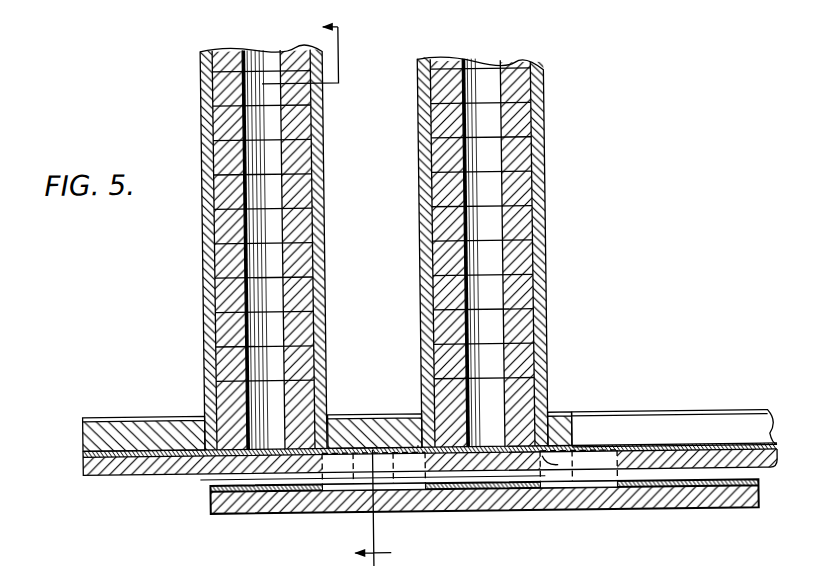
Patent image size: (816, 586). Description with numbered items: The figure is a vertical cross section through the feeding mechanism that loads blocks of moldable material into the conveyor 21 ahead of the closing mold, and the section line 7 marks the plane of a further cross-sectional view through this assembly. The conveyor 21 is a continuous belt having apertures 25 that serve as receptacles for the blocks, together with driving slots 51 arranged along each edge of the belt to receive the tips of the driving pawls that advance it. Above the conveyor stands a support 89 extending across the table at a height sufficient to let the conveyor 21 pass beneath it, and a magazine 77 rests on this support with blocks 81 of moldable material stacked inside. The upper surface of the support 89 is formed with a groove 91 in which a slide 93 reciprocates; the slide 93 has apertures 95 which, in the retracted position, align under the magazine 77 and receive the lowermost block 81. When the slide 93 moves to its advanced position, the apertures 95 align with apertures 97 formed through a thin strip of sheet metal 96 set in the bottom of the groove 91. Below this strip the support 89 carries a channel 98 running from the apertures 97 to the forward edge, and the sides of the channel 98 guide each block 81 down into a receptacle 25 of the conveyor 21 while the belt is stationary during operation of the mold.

The section line 7- 7 is at (334, 292).
The conveyor 21 is at (208, 488).
The apertures 25 is at (363, 485).
The driving slots 51 is at (238, 517).
The magazine 77 is at (330, 264).
The blocks of moldable material 81 is at (222, 265).
The support 89 is at (674, 418).
The groove 91 is at (601, 422).
The slide 93 is at (351, 434).
The apertures 95 is at (183, 456).
The strips of sheet metal 96 is at (180, 452).
The apertures 97 is at (418, 450).
The channel 98 is at (544, 471).